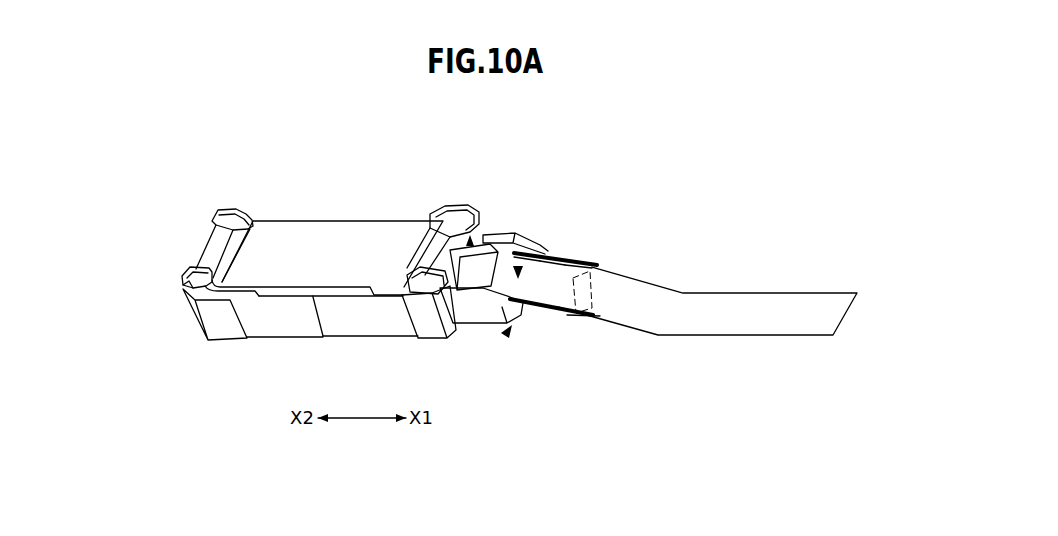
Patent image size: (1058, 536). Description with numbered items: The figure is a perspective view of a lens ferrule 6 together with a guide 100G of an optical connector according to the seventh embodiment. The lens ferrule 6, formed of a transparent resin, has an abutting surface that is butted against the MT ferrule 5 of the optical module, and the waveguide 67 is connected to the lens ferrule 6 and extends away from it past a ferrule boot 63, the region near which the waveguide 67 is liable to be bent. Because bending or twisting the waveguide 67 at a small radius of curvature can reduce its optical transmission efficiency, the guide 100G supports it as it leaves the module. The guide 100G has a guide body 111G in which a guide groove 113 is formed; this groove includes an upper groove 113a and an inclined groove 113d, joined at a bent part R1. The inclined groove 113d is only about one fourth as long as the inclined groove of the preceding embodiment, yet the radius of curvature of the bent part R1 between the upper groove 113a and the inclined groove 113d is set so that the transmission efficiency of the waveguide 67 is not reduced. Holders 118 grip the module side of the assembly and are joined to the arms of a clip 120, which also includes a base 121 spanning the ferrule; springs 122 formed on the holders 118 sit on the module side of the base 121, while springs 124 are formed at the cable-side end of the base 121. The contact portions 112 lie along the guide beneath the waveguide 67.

The MT ferrule 5 is at (283, 321).
The lens ferrule 6 is at (369, 321).
The ferrule boot 63 is at (458, 211).
The waveguide 67 is at (678, 313).
The guide 100G is at (507, 337).
The guide body 111G is at (560, 318).
The contact portion 112 is at (575, 258).
The guide groove 113 is at (494, 297).
The upper groove 113a is at (524, 283).
The inclined groove 113d is at (583, 270).
The holders 118 is at (492, 240).
The clip 120 is at (306, 263).
The base 121 is at (329, 240).
The springs 122 is at (472, 248).
The springs 124 is at (180, 290).
The bent part R1 is at (549, 297).